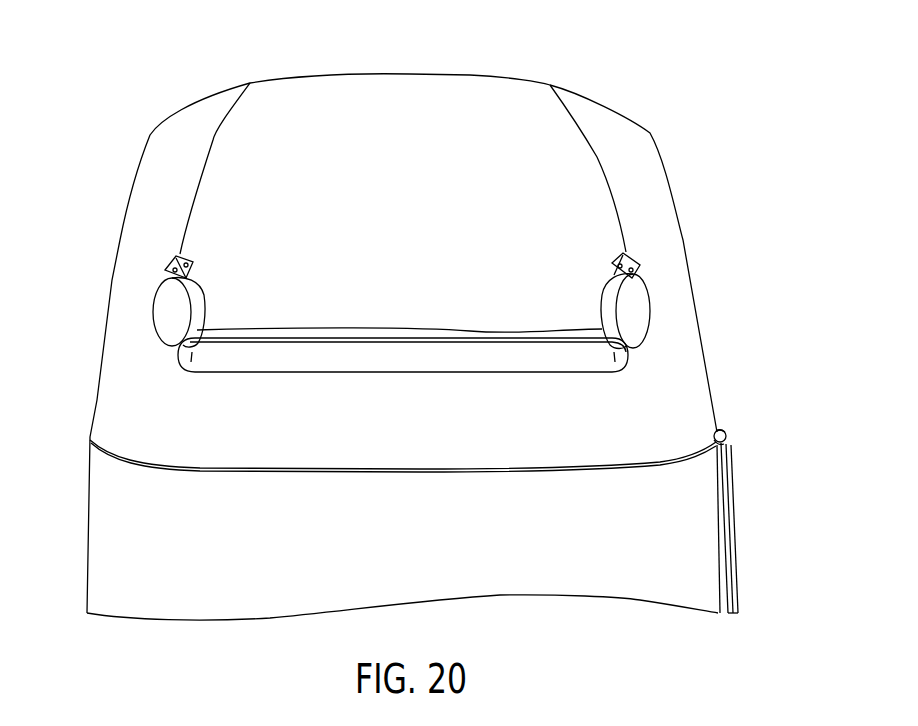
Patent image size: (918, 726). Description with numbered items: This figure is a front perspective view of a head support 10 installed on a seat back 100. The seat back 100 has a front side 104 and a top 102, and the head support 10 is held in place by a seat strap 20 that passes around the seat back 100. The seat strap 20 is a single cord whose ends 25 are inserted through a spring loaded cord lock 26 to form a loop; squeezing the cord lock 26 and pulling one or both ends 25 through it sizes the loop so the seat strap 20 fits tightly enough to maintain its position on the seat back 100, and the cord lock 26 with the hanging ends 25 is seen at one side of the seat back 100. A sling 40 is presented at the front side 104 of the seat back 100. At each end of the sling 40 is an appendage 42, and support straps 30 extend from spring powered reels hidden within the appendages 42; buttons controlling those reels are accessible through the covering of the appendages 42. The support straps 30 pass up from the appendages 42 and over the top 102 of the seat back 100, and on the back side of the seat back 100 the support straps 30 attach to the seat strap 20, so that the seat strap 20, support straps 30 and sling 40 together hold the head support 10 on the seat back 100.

The head support 10 is at (624, 450).
The seat strap 20 is at (402, 473).
The ends of cord 25 is at (738, 583).
The cord lock 26 is at (721, 430).
The support straps 30 is at (208, 157).
The sling 40 is at (403, 378).
The appendages 42 is at (600, 300).
The seat back 100 is at (703, 327).
The top of seat back 102 is at (402, 73).
The front side of seat back 104 is at (233, 544).